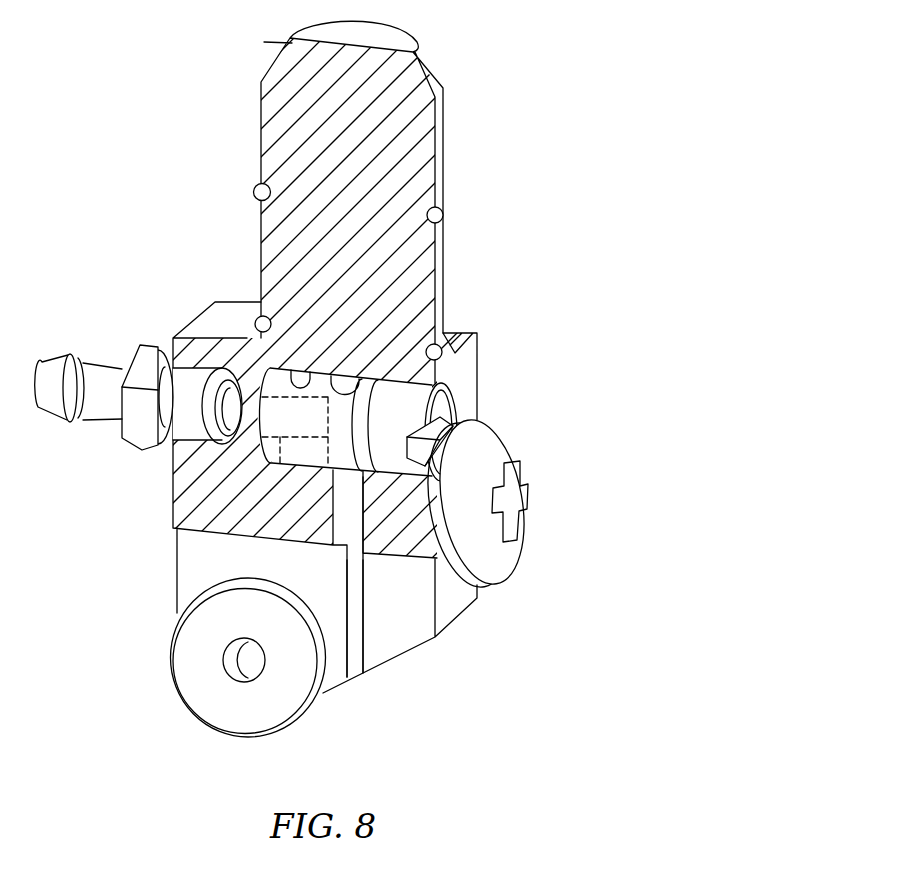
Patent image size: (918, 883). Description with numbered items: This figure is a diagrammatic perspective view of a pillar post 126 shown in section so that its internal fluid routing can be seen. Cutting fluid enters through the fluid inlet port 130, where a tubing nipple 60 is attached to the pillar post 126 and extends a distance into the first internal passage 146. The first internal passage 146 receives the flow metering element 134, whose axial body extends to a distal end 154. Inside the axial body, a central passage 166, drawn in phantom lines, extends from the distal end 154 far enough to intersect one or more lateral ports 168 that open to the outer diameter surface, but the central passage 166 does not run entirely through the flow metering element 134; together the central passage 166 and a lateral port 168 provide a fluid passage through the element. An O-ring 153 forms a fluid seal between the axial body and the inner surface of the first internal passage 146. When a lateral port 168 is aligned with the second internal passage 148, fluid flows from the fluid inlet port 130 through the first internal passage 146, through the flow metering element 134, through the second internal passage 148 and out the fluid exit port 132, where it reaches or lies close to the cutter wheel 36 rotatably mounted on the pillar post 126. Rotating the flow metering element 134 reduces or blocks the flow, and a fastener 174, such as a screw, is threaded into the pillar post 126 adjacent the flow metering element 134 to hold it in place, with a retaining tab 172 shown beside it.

The pillar post 126 is at (512, 112).
The flow metering element 134 is at (458, 392).
The distal end 154 is at (259, 400).
The first internal passage 146 is at (311, 369).
The central passage 166 is at (267, 464).
The lateral port 168 is at (350, 386).
The O-ring 153 is at (372, 414).
The retaining tab 172 is at (441, 440).
The fastener 174 is at (528, 520).
The second internal passage 148 is at (348, 507).
The fluid exit port 132 is at (336, 558).
The fluid inlet port 130 is at (166, 452).
The tubing nipple 60 is at (57, 360).
The cutter wheel 36 is at (198, 698).